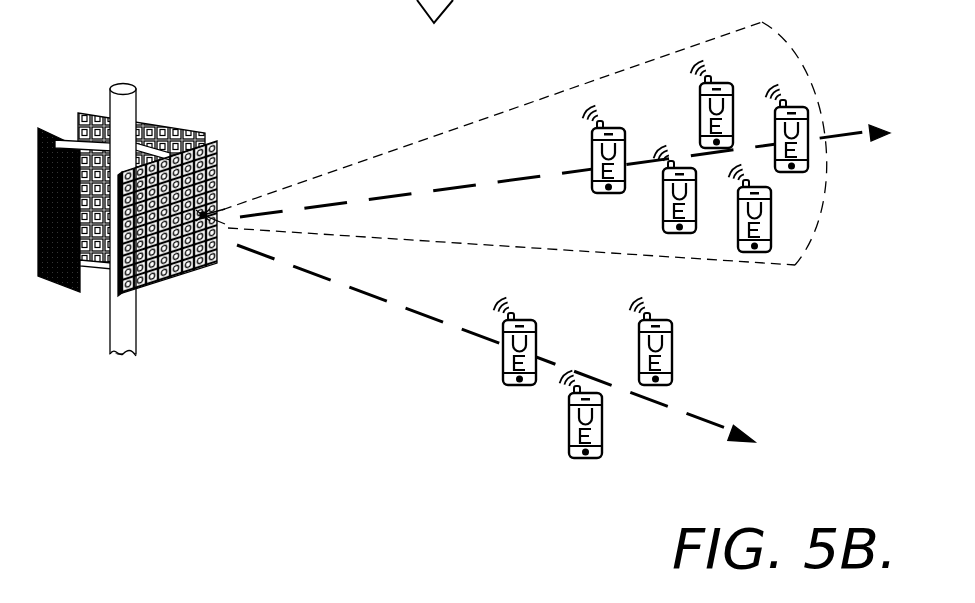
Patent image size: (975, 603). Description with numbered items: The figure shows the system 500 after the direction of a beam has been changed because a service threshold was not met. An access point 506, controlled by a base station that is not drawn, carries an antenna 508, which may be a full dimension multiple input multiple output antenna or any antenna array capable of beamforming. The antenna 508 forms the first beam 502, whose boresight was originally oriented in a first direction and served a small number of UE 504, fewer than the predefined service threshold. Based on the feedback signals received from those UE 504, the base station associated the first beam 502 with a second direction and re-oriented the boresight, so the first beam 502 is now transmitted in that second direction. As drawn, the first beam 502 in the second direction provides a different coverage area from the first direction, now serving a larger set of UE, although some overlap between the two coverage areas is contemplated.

The system 500 is at (347, 58).
The first beam 502 is at (560, 92).
The UE 504 is at (603, 122).
The access point 506 is at (125, 357).
The antenna 508 is at (195, 273).